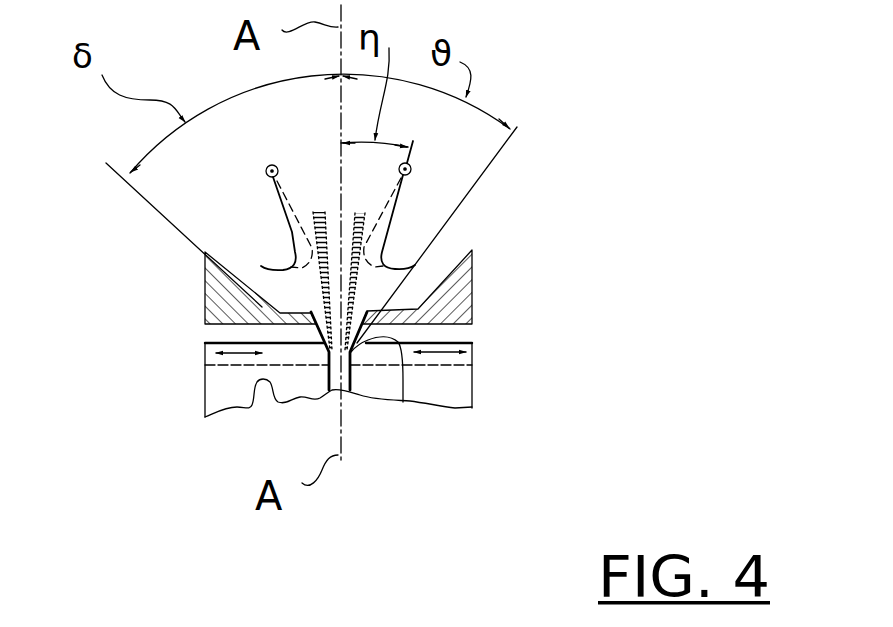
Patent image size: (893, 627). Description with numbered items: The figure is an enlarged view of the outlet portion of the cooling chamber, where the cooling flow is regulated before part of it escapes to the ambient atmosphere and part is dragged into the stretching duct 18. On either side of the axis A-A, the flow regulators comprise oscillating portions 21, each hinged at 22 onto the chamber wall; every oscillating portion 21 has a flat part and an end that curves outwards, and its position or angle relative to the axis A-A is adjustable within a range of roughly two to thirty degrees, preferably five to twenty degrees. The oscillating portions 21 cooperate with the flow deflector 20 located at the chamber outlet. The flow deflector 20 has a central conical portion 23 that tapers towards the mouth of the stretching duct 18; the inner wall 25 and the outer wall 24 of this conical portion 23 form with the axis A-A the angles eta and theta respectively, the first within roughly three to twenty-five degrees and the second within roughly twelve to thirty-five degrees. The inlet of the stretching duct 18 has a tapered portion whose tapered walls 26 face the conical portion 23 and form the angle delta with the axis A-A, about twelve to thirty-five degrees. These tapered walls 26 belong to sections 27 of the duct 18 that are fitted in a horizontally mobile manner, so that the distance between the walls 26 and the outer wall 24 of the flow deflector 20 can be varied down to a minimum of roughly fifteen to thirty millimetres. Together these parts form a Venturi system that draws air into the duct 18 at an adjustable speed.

The stretching duct 18 is at (430, 387).
The flow deflector 20 is at (207, 313).
The oscillating portions 21 is at (296, 256).
The hinge 22 is at (408, 170).
The central conical portion 23 is at (308, 337).
The outer wall 24 is at (403, 402).
The inner wall 25 is at (372, 300).
The tapered walls 26 is at (328, 350).
The sections 27 is at (204, 360).